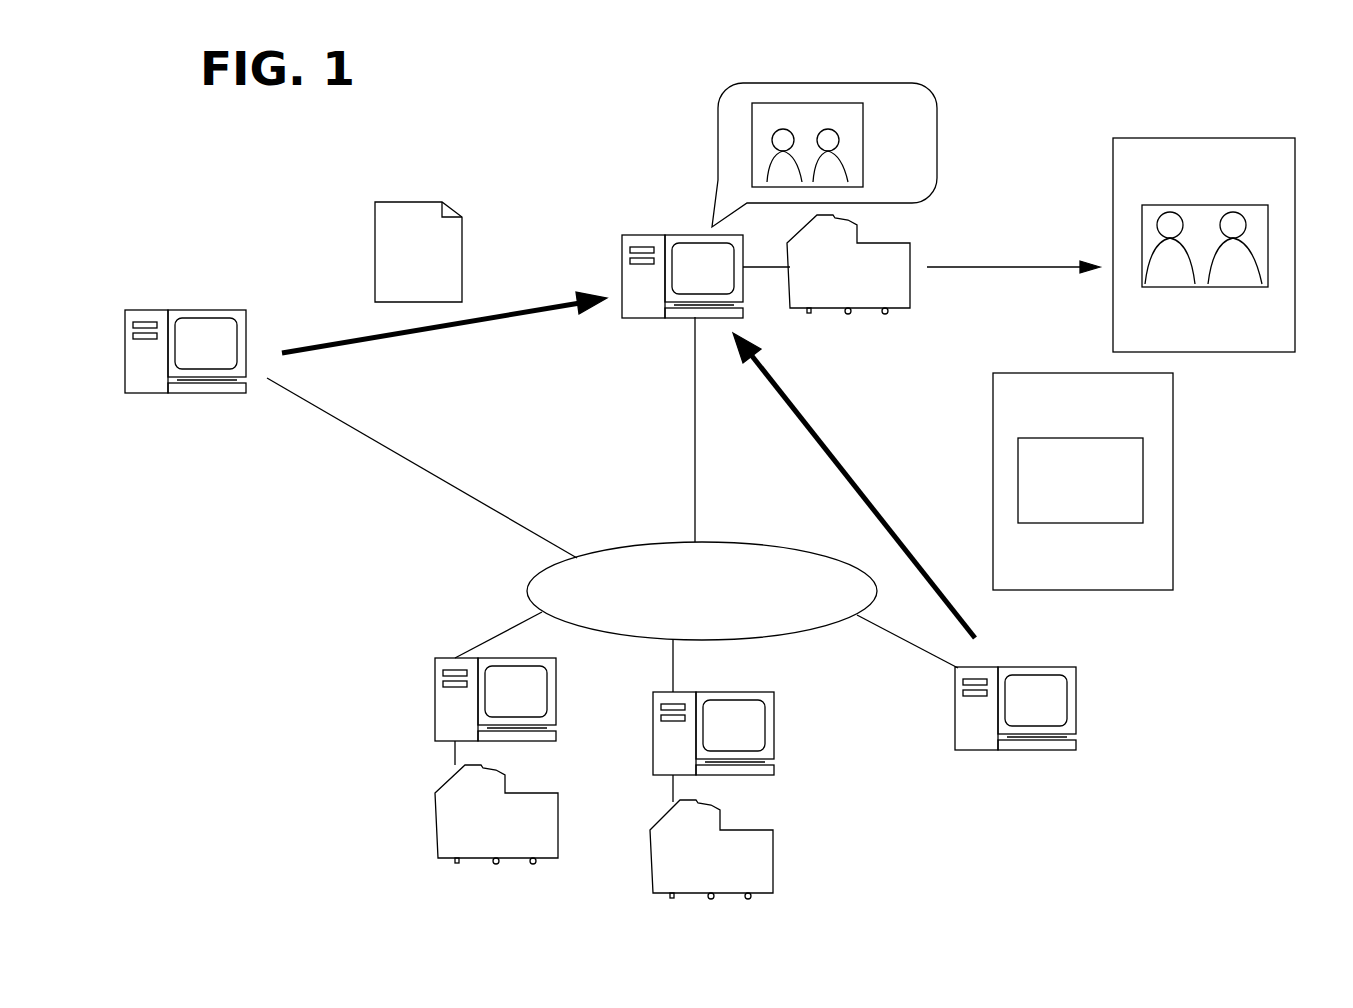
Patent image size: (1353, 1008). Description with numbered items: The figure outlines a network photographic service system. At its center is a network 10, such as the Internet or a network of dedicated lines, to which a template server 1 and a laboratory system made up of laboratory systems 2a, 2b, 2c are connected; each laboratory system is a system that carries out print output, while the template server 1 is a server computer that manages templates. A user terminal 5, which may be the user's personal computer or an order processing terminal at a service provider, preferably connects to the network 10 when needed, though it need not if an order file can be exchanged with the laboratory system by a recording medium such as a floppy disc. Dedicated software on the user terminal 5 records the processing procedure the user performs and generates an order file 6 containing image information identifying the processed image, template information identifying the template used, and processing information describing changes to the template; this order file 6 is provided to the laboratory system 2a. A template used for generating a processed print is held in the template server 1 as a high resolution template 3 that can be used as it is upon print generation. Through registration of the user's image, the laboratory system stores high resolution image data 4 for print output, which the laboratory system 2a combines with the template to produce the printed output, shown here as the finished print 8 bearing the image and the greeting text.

The template server 1 is at (1047, 750).
The laboratory system 2a is at (653, 235).
The laboratory system 2b is at (435, 710).
The laboratory system 2c is at (773, 745).
The high resolution template 3 is at (1173, 530).
The high resolution image data 4 is at (863, 138).
The user terminal 5 is at (195, 310).
The order file 6 is at (373, 233).
The printed greeting card 8 is at (1295, 170).
The network 10 is at (655, 543).